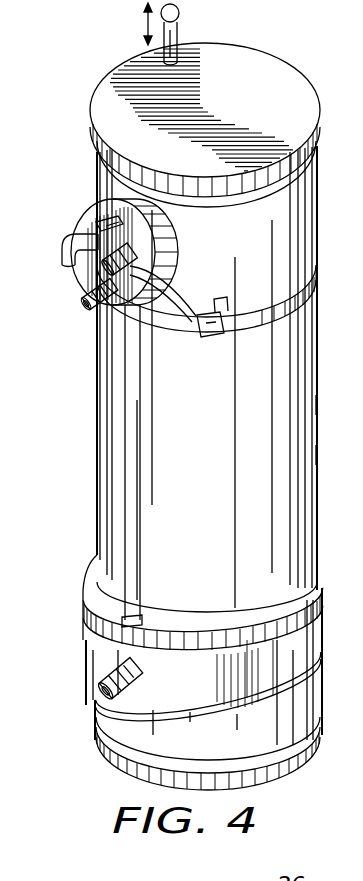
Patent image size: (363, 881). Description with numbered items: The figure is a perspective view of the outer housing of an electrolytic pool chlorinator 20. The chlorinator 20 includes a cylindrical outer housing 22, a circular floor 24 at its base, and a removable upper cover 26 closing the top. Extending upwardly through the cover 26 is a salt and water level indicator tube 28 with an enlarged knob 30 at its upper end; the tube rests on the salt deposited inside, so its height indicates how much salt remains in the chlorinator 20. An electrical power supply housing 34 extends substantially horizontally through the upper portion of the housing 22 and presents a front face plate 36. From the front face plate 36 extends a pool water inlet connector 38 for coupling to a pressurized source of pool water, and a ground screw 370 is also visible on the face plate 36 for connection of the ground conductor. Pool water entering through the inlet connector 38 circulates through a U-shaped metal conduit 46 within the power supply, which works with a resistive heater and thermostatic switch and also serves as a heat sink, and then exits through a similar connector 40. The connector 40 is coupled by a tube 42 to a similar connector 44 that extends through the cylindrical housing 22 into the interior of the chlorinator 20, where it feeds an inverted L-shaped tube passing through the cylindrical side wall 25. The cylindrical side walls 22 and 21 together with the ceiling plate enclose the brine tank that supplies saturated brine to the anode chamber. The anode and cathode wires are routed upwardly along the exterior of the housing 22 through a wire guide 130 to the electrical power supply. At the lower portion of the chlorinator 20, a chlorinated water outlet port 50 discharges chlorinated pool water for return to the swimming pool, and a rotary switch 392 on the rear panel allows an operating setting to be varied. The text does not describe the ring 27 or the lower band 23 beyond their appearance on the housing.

The electrolytic pool chlorinator 20 is at (323, 360).
The cylindrical side wall 21 is at (313, 224).
The cylindrical outer housing 22 is at (318, 508).
The base housing 23 is at (308, 642).
The circular floor 24 is at (310, 741).
The cylindrical side wall 25 is at (283, 611).
The removable upper cover 26 is at (278, 72).
The clamp band 27 is at (230, 337).
The salt and water level indicator tube 28 is at (178, 33).
The enlarged knob 30 is at (179, 12).
The electrical power supply housing 34 is at (98, 194).
The front face plate 36 is at (103, 264).
The pool water inlet connector 38 is at (63, 264).
The connector 40 is at (88, 294).
The tube 42 is at (181, 315).
The connector 44 is at (238, 321).
The metal conduit 46 is at (339, 458).
The chlorinated water outlet port 50 is at (98, 682).
The wire guide 130 is at (139, 527).
The ground screw 370 is at (79, 219).
The rotary switch 392 is at (339, 405).